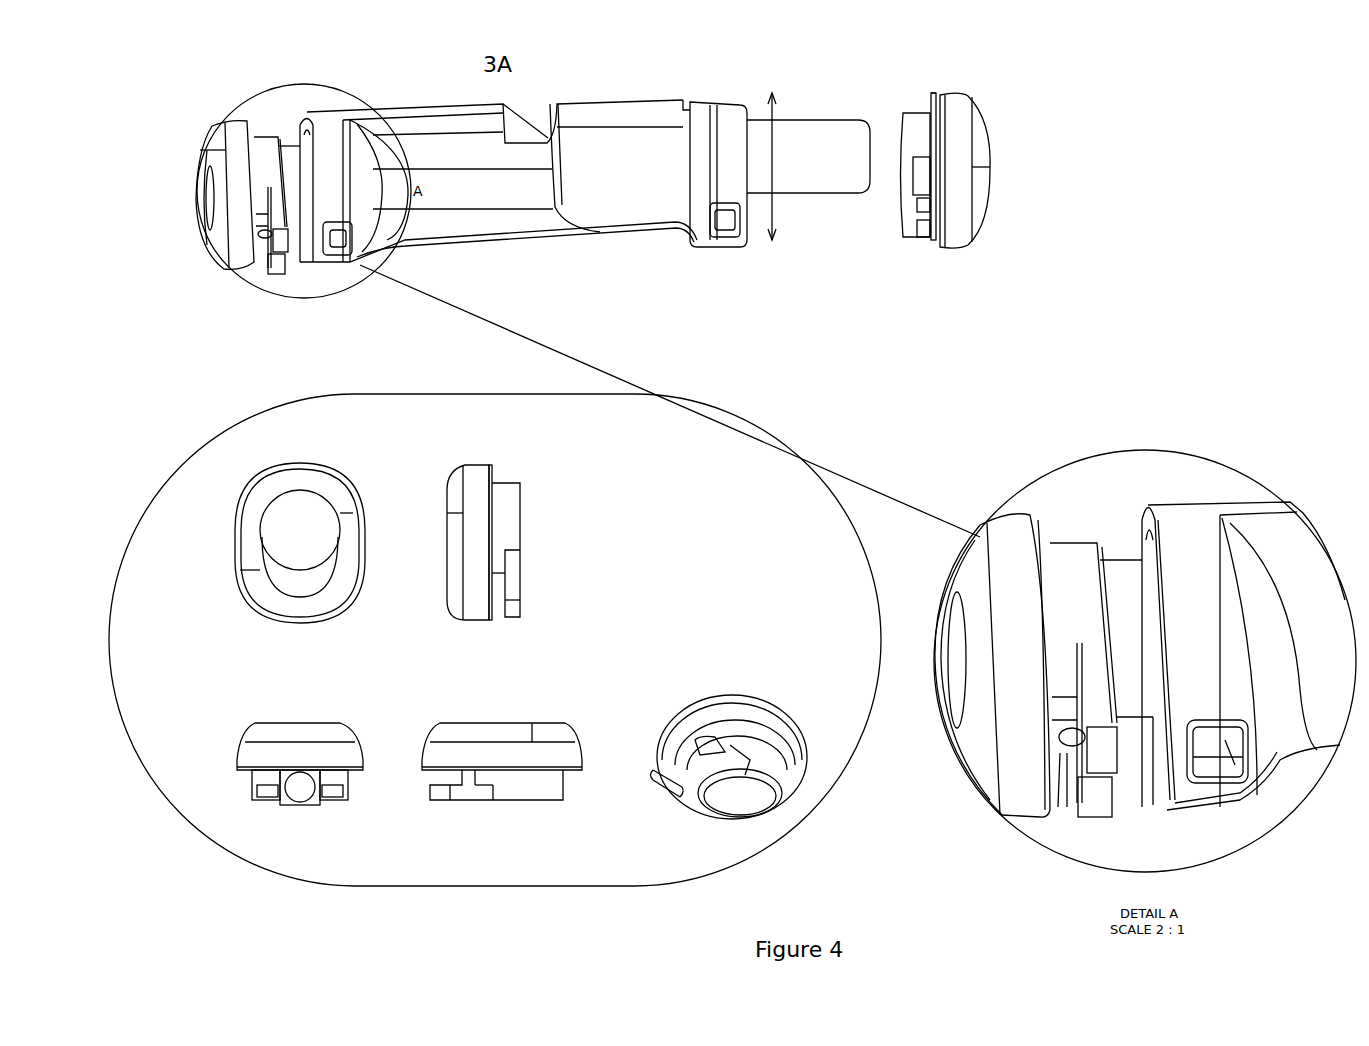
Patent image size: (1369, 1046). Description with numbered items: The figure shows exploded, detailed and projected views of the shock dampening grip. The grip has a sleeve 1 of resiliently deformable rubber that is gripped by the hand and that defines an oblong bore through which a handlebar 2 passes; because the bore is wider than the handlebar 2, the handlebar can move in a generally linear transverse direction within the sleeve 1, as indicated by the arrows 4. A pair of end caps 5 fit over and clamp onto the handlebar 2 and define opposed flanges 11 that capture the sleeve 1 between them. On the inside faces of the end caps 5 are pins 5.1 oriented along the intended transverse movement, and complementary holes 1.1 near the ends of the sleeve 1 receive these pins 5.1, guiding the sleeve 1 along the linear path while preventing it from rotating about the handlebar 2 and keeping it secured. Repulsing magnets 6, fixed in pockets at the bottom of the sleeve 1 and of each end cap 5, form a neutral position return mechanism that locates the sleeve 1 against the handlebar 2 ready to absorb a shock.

The sleeve 1 is at (437, 130).
The holes 1.1 is at (353, 247).
The handlebar 2 is at (293, 153).
The arrows 4 is at (786, 166).
The end caps 5 is at (220, 125).
The pins 5.1 is at (275, 257).
The repulsing magnets 6 is at (265, 236).
The flanges 11 is at (933, 96).